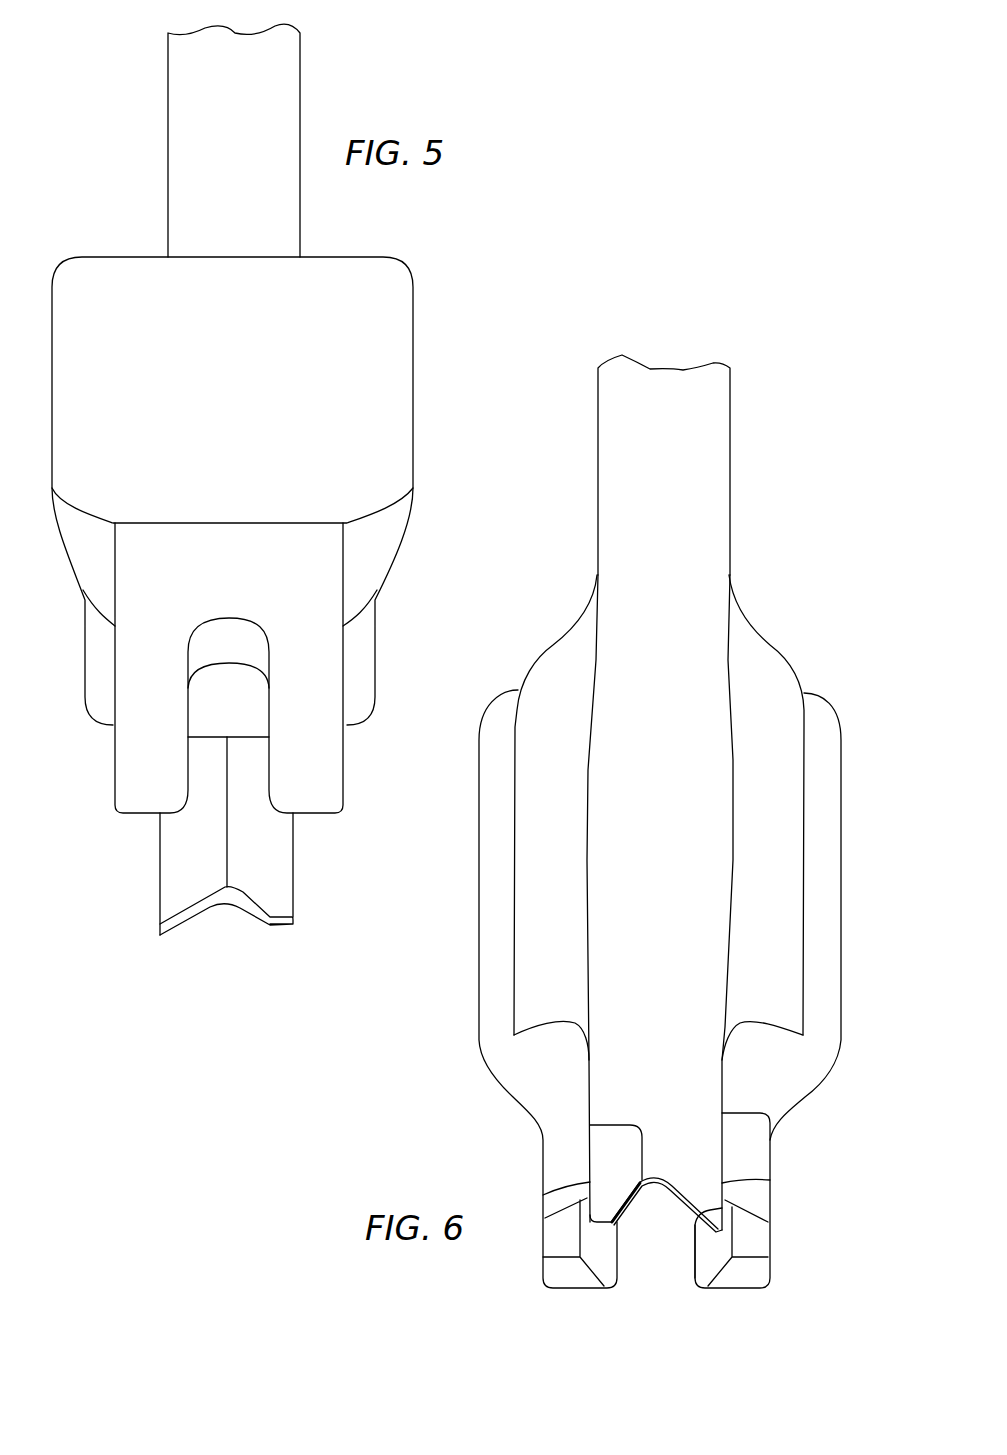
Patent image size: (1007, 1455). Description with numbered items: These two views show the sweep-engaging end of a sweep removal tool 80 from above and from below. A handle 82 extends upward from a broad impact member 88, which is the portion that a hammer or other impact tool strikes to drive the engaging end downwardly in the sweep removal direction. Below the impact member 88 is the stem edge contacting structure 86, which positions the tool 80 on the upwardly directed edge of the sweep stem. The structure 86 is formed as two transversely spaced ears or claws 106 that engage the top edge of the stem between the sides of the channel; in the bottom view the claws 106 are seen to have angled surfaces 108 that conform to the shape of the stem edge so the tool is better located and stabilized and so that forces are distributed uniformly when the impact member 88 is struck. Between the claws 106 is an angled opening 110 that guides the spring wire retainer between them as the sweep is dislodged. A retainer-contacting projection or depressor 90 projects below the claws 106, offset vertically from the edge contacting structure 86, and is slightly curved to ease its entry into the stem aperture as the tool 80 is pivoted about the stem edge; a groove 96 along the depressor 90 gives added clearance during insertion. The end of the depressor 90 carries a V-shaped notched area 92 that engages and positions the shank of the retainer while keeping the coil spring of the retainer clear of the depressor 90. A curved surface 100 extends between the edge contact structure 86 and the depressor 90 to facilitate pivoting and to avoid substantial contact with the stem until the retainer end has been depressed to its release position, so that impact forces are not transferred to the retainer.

In FIG. 5, the sweep removal tool 80 is at (116, 115).
In FIG. 6, the sweep removal tool 80 is at (776, 405).
In FIG. 5, the handle 82 is at (183, 203).
In FIG. 6, the handle 82 is at (720, 465).
In FIG. 5, the stem edge contacting structure 86 is at (368, 813).
In FIG. 6, the stem edge contacting structure 86 is at (549, 1304).
In FIG. 5, the impact member 88 is at (375, 296).
In FIG. 5, the depressor 90 is at (126, 924).
In FIG. 6, the depressor 90 is at (692, 1155).
In FIG. 5, the notched area 92 is at (206, 913).
In FIG. 6, the notched area 92 is at (630, 1208).
In FIG. 5, the groove 96 is at (223, 861).
In FIG. 5, the curved surface 100 is at (98, 665).
In FIG. 6, the curved surface 100 is at (545, 1075).
In FIG. 5, the claws 106 is at (305, 785).
In FIG. 6, the claws 106 is at (587, 1283).
In FIG. 6, the angled surfaces 108 is at (750, 1193).
In FIG. 6, the angled opening 110 is at (684, 1245).